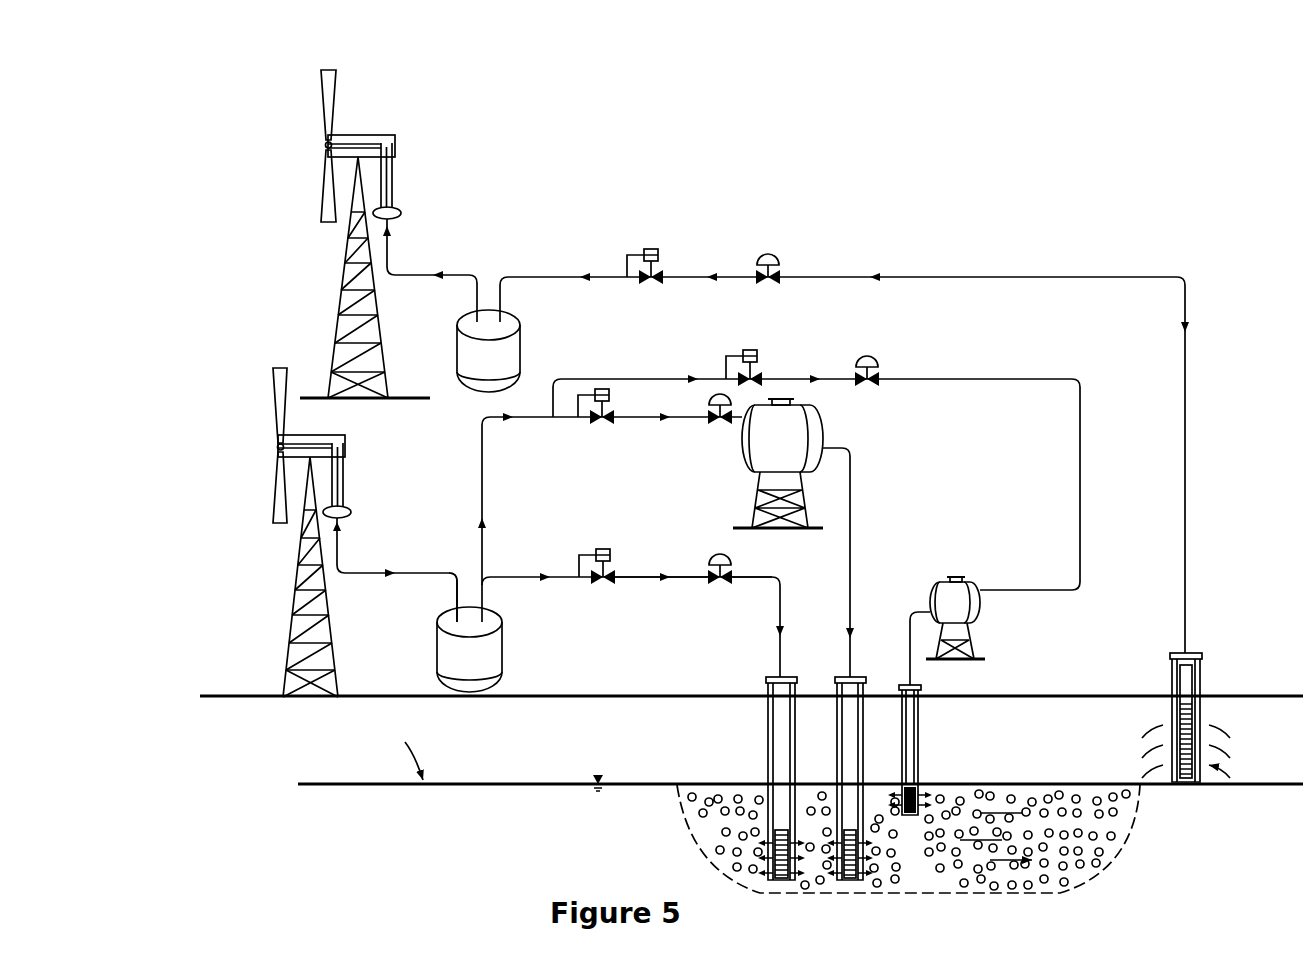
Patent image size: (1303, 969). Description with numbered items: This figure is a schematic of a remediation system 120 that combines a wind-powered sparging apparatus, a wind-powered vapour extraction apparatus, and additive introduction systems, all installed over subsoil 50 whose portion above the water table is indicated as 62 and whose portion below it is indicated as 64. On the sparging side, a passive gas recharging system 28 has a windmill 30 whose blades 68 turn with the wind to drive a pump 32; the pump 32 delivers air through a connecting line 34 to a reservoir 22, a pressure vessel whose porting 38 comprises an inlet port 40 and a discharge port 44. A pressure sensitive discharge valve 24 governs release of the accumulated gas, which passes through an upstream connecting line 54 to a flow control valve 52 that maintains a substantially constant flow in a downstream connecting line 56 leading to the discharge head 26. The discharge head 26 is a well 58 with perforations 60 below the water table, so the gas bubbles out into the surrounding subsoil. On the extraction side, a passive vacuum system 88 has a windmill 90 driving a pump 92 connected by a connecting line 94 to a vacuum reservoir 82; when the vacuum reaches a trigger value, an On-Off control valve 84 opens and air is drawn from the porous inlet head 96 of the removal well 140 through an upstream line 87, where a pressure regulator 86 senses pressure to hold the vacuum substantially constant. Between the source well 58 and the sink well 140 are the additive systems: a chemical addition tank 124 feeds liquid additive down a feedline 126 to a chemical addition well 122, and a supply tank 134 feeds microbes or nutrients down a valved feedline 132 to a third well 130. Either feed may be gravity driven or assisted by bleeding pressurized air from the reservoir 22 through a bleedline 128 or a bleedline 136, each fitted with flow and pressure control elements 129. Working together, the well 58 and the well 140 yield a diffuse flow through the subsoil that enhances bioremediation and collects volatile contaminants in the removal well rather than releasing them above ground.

The remediation system 120 is at (777, 120).
The passive vacuum system 88 is at (330, 72).
The blades 68 is at (316, 114).
The windmill 90 is at (368, 133).
The pump 92 is at (400, 208).
The connecting line 94 is at (437, 280).
The reservoir 82 is at (522, 362).
The control valve 84 is at (651, 247).
The pressure regulator 86 is at (768, 256).
The upstream line 87 is at (830, 275).
The inlet head 96 is at (1160, 652).
The passive gas recharging system 28 is at (273, 348).
The windmill 30 is at (311, 446).
The pump 32 is at (348, 508).
The connecting line 34 is at (390, 592).
The porting 38 is at (462, 575).
The inlet port 40 is at (452, 613).
The discharge port 44 is at (487, 613).
The reservoir 22 is at (510, 670).
The discharge valve 24 is at (602, 548).
The upstream connecting line 54 is at (636, 580).
The flow control valve 52 is at (719, 556).
The downstream connecting line 56 is at (770, 575).
The discharge head 26 is at (755, 684).
The well 58 is at (798, 715).
The perforations 60 is at (790, 884).
The flow and pressure control elements 129 is at (865, 348).
The bleedline 136 is at (888, 376).
The bleedline 128 is at (634, 414).
The chemical addition tank 124 is at (826, 425).
The feedline 126 is at (858, 532).
The chemical addition well 122 is at (866, 716).
The third well 130 is at (921, 735).
The feedline 132 is at (905, 608).
The supply tank 134 is at (985, 618).
The well 140 is at (1203, 682).
The subsoil 50 is at (252, 718).
The soil portion above water table 62 is at (540, 738).
The soil portion below water table 64 is at (510, 823).